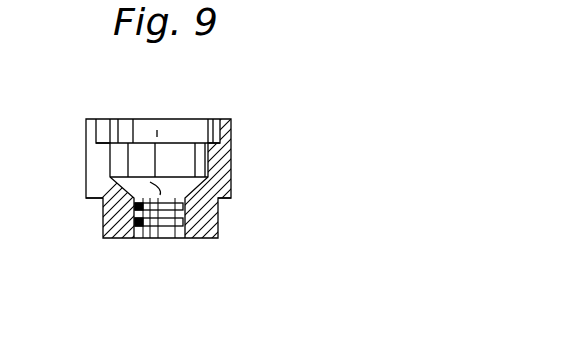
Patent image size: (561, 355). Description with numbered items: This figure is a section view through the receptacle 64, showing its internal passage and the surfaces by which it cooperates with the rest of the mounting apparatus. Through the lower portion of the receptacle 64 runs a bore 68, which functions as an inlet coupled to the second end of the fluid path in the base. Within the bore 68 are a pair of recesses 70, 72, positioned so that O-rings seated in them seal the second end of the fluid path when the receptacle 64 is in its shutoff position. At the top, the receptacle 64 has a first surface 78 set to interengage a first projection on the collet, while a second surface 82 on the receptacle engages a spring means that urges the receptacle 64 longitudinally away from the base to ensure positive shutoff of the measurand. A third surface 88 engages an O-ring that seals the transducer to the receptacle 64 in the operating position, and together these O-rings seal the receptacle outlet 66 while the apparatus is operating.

The receptacle 64 is at (244, 168).
The receptacle outlet 66 is at (100, 199).
The bore 68 is at (167, 240).
The recess 70 is at (147, 240).
The recess 72 is at (150, 240).
The first surface 78 is at (88, 119).
The second surface 82 is at (226, 198).
The third surface 88 is at (214, 140).